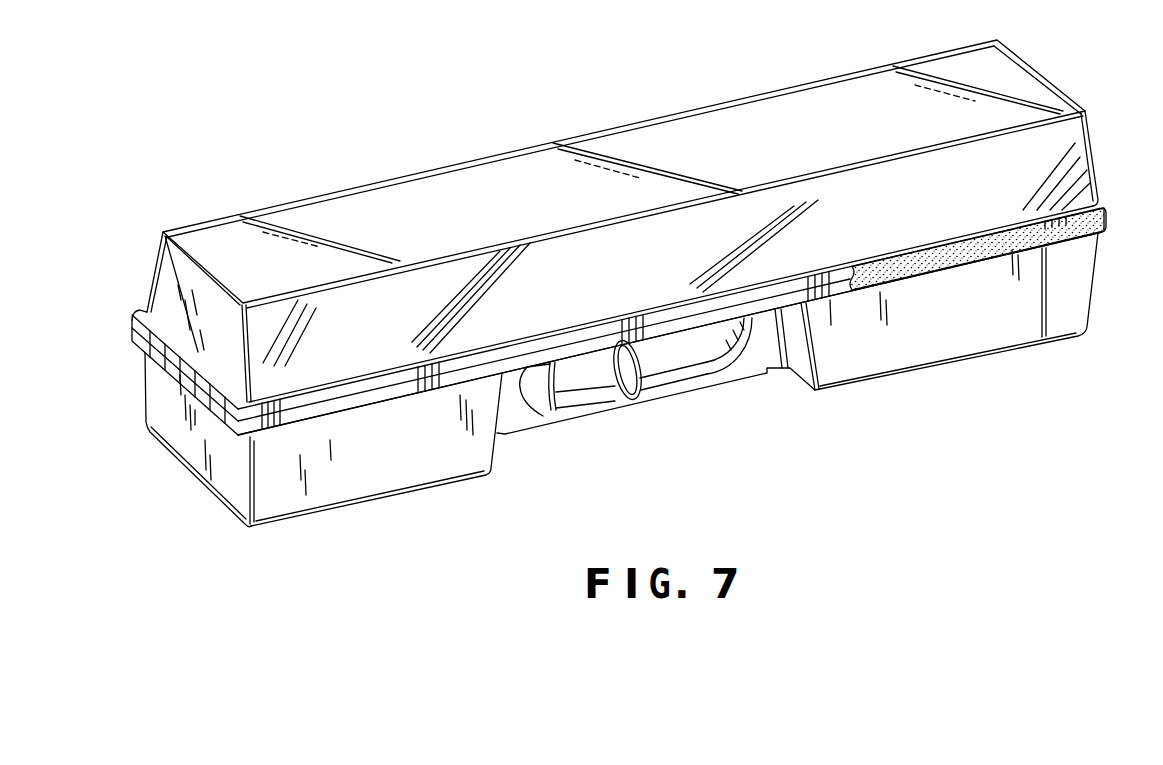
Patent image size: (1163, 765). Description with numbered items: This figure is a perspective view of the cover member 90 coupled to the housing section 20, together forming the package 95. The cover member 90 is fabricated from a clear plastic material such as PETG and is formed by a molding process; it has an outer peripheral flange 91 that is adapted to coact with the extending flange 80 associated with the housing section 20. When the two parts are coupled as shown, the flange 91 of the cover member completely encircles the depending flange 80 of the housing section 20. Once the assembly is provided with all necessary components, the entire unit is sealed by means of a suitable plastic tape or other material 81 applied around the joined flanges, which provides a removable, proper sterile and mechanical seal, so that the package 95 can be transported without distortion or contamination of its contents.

The housing section 20 is at (1083, 295).
The extending flange 80 is at (437, 386).
The plastic tape 81 is at (1108, 220).
The cover member 90 is at (1082, 158).
The outer peripheral flange 91 is at (350, 395).
The package 95 is at (647, 290).